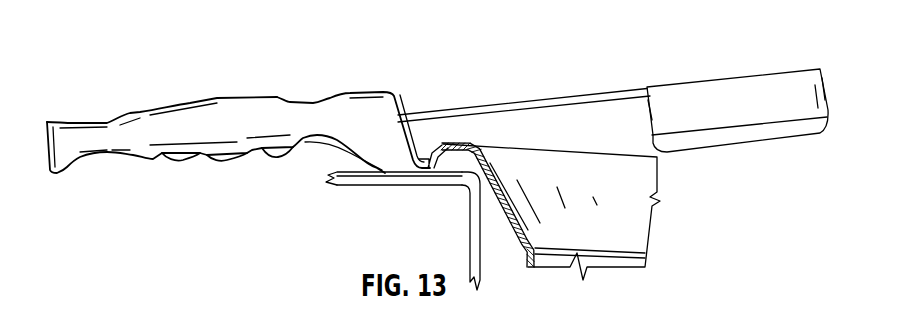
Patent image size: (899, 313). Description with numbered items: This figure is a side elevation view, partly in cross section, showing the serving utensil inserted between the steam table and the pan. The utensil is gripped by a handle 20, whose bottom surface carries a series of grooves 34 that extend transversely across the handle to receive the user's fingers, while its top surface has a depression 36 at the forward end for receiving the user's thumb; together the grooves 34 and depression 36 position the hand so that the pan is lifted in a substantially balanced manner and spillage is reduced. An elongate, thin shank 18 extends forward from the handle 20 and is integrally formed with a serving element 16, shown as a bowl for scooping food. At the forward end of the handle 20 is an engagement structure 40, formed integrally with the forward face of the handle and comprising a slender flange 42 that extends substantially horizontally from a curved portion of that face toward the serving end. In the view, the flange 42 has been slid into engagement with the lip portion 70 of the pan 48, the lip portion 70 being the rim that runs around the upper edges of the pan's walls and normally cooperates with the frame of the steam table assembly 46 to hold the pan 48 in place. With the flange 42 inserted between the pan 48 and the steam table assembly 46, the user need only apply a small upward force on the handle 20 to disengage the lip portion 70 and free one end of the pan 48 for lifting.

The handle 20 is at (217, 94).
The depression 36 is at (317, 99).
The grooves 34 is at (282, 177).
The shank 18 is at (502, 107).
The serving element 16 is at (699, 83).
The pan 48 is at (525, 152).
The lip portion 70 is at (424, 157).
The engagement structure 40 is at (397, 160).
The steam table assembly 46 is at (380, 186).
The flange 42 is at (431, 170).